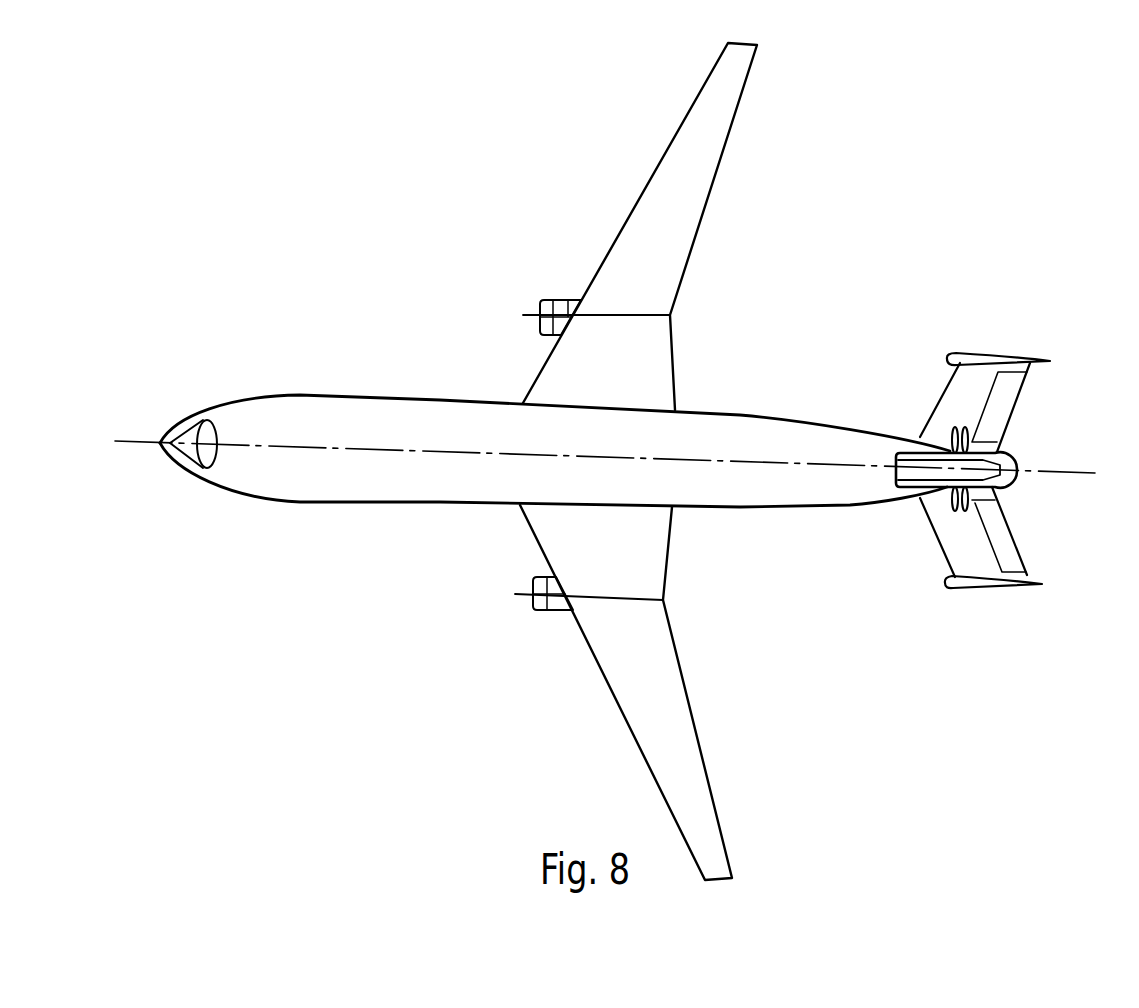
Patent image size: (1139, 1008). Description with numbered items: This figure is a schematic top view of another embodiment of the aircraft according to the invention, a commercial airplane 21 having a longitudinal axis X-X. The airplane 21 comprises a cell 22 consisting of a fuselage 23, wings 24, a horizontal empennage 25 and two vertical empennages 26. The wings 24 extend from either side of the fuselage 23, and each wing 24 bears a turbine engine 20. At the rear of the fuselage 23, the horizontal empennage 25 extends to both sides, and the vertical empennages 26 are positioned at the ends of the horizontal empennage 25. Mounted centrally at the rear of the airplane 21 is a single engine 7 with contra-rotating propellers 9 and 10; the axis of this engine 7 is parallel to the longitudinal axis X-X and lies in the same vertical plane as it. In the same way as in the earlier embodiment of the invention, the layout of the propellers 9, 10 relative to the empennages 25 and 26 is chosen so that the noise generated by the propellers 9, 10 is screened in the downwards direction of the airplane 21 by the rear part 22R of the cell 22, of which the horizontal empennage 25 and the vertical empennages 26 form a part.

The engine 7 is at (895, 472).
The propeller 9 is at (947, 493).
The propeller 10 is at (970, 500).
The turbine engine 20 is at (538, 297).
The commercial airplane 21 is at (428, 256).
The cell 22 is at (773, 406).
The rear part of the cell 22R is at (1012, 436).
The fuselage 23 is at (388, 480).
The wings 24 is at (695, 157).
The horizontal empennage 25 is at (953, 407).
The vertical empennages 26 is at (982, 357).